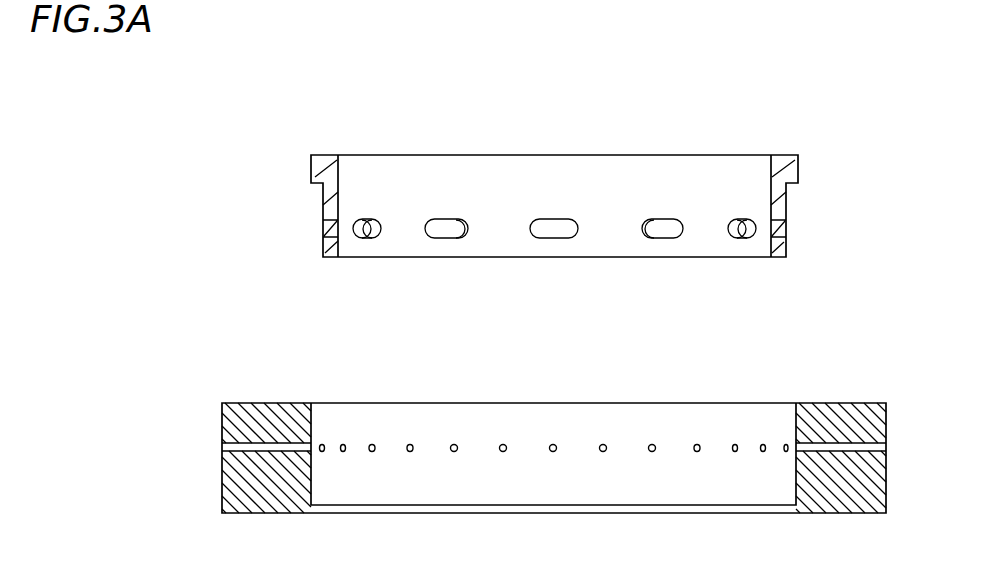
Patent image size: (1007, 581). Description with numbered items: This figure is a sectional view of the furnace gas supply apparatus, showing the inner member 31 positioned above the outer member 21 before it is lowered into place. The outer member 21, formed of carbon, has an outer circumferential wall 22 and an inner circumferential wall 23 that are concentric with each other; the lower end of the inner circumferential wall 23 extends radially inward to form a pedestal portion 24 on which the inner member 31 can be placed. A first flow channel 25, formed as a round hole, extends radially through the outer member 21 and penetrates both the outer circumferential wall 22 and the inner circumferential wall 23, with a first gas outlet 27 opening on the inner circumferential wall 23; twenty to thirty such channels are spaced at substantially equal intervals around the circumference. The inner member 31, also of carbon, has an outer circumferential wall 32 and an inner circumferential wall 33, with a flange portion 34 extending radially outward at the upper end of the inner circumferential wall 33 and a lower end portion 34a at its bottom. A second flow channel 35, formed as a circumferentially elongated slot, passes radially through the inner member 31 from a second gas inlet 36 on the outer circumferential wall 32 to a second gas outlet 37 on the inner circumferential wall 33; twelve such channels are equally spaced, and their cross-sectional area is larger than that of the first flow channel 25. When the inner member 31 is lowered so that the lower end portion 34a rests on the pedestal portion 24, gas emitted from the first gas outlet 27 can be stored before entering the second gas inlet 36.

The outer member 21 is at (568, 402).
The outer circumferential wall 22 is at (222, 424).
The inner circumferential wall 23 is at (673, 422).
The pedestal portion 24 is at (784, 499).
The first flow channel 25 is at (453, 444).
The first gas outlet 27 is at (652, 454).
The inner member 31 is at (402, 152).
The outer circumferential wall 32 is at (324, 198).
The inner circumferential wall 33 is at (645, 183).
The flange portion 34 is at (799, 164).
The lower end portion 34a is at (775, 260).
The second flow channel 35 is at (556, 217).
The second gas inlet 36 is at (323, 228).
The second gas outlet 37 is at (339, 230).